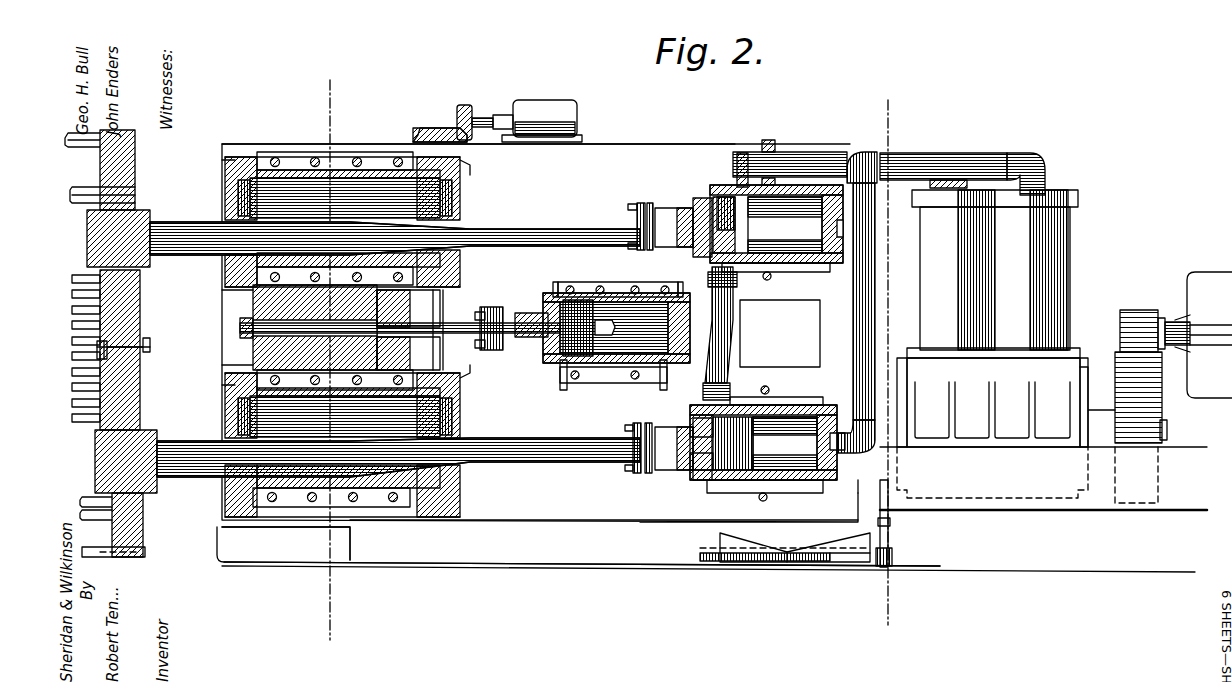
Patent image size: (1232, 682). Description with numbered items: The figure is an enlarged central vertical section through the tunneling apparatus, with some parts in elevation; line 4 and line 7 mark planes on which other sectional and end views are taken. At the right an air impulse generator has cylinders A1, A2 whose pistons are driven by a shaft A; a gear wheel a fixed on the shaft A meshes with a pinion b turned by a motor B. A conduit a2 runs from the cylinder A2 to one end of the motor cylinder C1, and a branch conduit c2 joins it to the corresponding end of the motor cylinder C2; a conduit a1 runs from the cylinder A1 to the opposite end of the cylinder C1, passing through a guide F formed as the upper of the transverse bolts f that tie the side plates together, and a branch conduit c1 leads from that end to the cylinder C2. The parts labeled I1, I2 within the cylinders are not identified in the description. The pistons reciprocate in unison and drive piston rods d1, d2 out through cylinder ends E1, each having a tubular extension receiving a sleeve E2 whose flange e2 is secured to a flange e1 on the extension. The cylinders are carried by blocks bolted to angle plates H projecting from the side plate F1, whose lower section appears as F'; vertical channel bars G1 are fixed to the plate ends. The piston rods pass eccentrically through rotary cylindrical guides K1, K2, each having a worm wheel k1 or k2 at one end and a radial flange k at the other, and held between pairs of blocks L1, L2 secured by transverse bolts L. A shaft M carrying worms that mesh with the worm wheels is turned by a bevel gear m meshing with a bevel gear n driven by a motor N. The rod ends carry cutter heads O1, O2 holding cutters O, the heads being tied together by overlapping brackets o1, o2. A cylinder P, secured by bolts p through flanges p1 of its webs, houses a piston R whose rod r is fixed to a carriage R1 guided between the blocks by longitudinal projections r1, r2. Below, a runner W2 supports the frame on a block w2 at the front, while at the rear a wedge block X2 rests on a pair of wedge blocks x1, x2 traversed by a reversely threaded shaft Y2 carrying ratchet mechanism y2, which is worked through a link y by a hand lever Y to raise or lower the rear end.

The section line 4 is at (350, 109).
The section line 7 is at (917, 603).
The cutters O is at (72, 296).
The top cutter head O1 is at (135, 152).
The bottom cutter head O2 is at (143, 531).
The brackets o1 is at (143, 330).
The brackets o2 is at (150, 350).
The vertical channel bar G1 is at (820, 345).
The piston rod d1 is at (548, 228).
The piston rod d2 is at (545, 447).
The rotary cylindrical guide K1 is at (460, 192).
The rotary cylindrical guide K2 is at (460, 408).
The pair of blocks L1 is at (387, 282).
The pair of blocks L2 is at (288, 502).
The bolts L is at (350, 502).
The longitudinal projection r1 is at (333, 282).
The longitudinal projection r2 is at (330, 368).
The piston rod r is at (440, 315).
The radial flange k is at (227, 380).
The worm wheel k1 is at (463, 166).
The worm wheel k2 is at (460, 377).
The carriage R1 is at (250, 302).
The piston R is at (600, 330).
The shaft M is at (437, 130).
The bevel gear m is at (420, 132).
The bevel gear n is at (462, 107).
The motor N is at (543, 107).
The cylinder P is at (617, 293).
The transverse bolts p is at (597, 373).
The flange p1 is at (618, 373).
The flange e1 is at (645, 427).
The flange e2 is at (637, 470).
The cylinder end E1 is at (693, 425).
The sleeve E2 is at (683, 470).
The motor cylinder C1 is at (776, 228).
The motor cylinder C2 is at (767, 449).
The upper piston I1 is at (725, 225).
The lower piston I2 is at (733, 443).
The guide F is at (779, 147).
The side plate F1 is at (660, 138).
The side plate F' is at (604, 530).
The conduit a1 is at (827, 160).
The conduit a2 is at (955, 160).
The branch conduit c1 is at (735, 330).
The branch conduit c2 is at (857, 322).
The transverse bolts f is at (768, 507).
The angle plates H is at (785, 401).
The cylinder A1 is at (963, 273).
The cylinder A2 is at (1040, 273).
The shaft A is at (1163, 427).
The gear wheel a is at (1123, 393).
The pinion b is at (1138, 313).
The motor B is at (1193, 322).
The wedge block X2 is at (780, 537).
The wedge block x1 is at (720, 542).
The wedge block x2 is at (850, 548).
The screw-threaded shaft Y2 is at (798, 562).
The hand lever Y is at (885, 493).
The link y is at (888, 522).
The ratchet mechanism y2 is at (892, 552).
The block w2 is at (350, 540).
The runner W2 is at (450, 560).